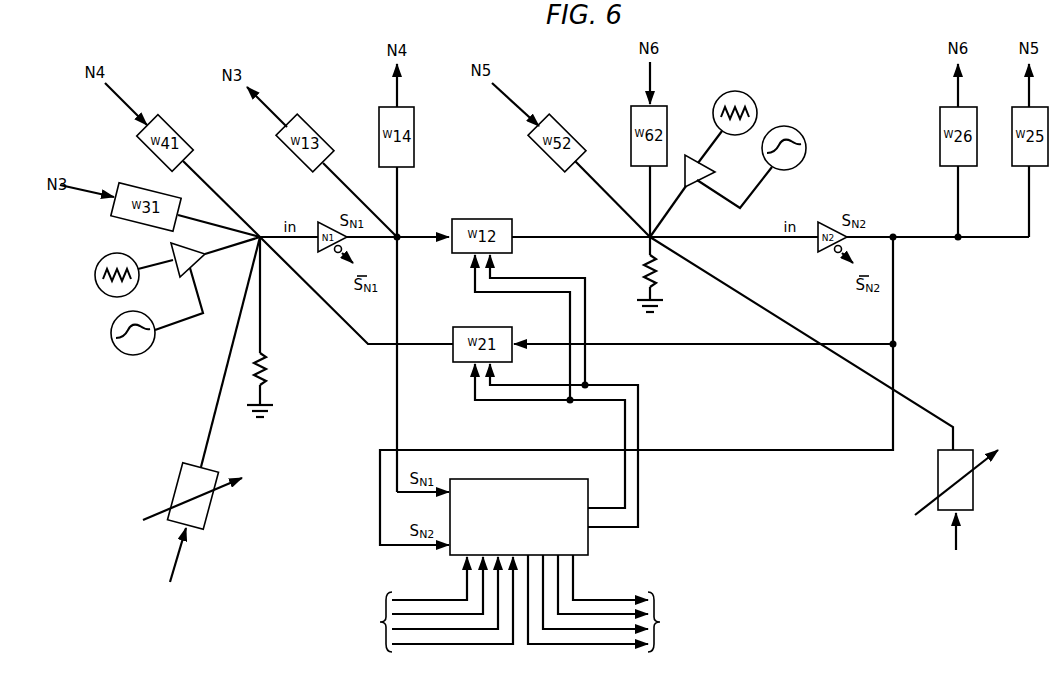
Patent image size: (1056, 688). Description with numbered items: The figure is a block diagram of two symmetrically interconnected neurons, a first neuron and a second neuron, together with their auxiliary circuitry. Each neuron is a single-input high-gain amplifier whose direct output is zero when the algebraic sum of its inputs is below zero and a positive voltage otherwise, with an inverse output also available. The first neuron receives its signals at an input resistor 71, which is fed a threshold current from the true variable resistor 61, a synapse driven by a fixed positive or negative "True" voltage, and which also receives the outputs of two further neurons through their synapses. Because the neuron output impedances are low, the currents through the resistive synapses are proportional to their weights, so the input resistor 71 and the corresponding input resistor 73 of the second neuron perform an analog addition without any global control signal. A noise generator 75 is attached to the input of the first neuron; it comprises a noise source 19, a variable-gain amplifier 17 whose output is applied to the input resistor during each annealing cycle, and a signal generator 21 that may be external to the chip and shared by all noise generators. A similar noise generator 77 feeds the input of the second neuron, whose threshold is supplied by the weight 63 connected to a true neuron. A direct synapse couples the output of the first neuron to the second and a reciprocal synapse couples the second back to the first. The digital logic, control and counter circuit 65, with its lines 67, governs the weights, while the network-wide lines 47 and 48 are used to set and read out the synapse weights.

The variable-gain amplifier 17 is at (195, 262).
The noise source 19 is at (104, 262).
The signal generator 21 is at (135, 355).
The network-wide lines 47 is at (432, 604).
The network-wide lines 48 is at (607, 603).
The true variable resistor (synapse) 61 is at (183, 478).
The weight 63 is at (975, 453).
The digital logic, control and counter circuit 65 is at (558, 478).
The lines 67 is at (527, 278).
The input resistor 71 is at (270, 367).
The input resistor 73 is at (641, 266).
The noise generator 75 is at (100, 306).
The noise generator 77 is at (772, 111).